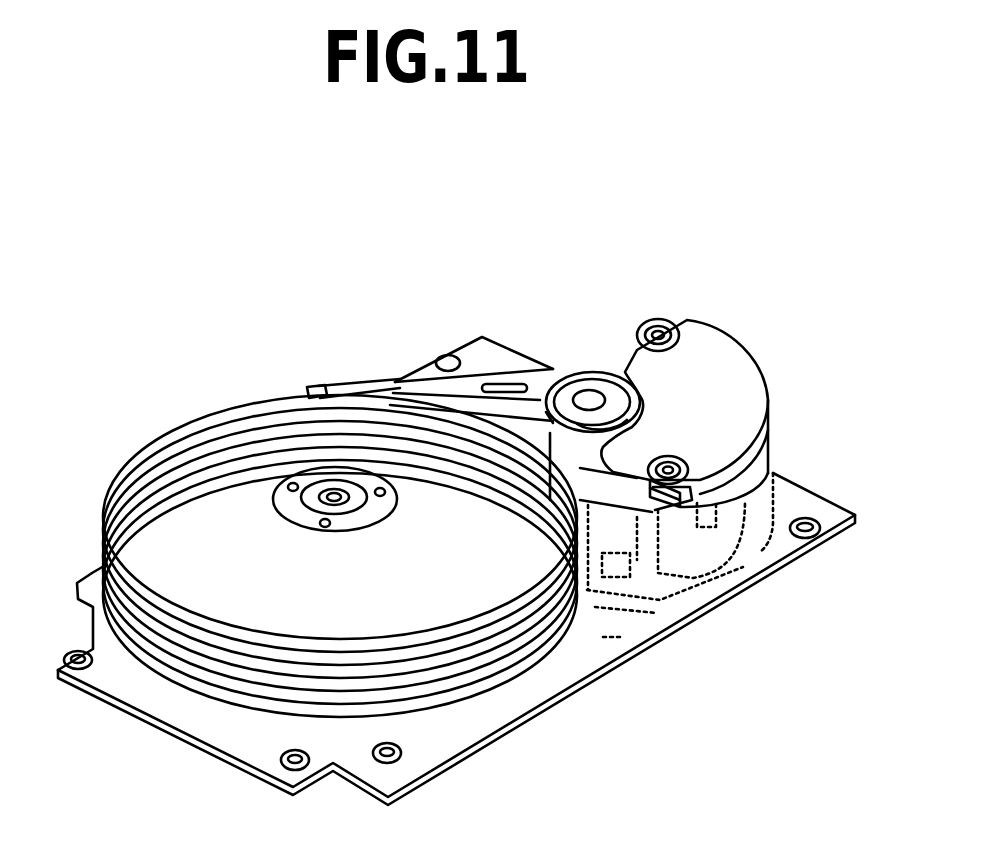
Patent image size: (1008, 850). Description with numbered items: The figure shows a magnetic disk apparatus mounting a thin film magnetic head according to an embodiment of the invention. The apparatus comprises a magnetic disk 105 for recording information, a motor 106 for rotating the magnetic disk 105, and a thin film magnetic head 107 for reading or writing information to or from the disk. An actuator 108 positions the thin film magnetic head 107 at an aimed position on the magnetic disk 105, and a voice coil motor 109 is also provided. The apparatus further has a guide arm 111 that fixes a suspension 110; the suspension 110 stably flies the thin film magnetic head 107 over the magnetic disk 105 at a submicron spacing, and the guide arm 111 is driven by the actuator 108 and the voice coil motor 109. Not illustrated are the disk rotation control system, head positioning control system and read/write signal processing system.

The magnetic disk 105 is at (198, 543).
The motor 106 is at (300, 480).
The thin film magnetic head 107 is at (315, 384).
The actuator 108 is at (589, 400).
The voice coil motor 109 is at (775, 488).
The suspension 110 is at (427, 384).
The guide arm 111 is at (625, 585).